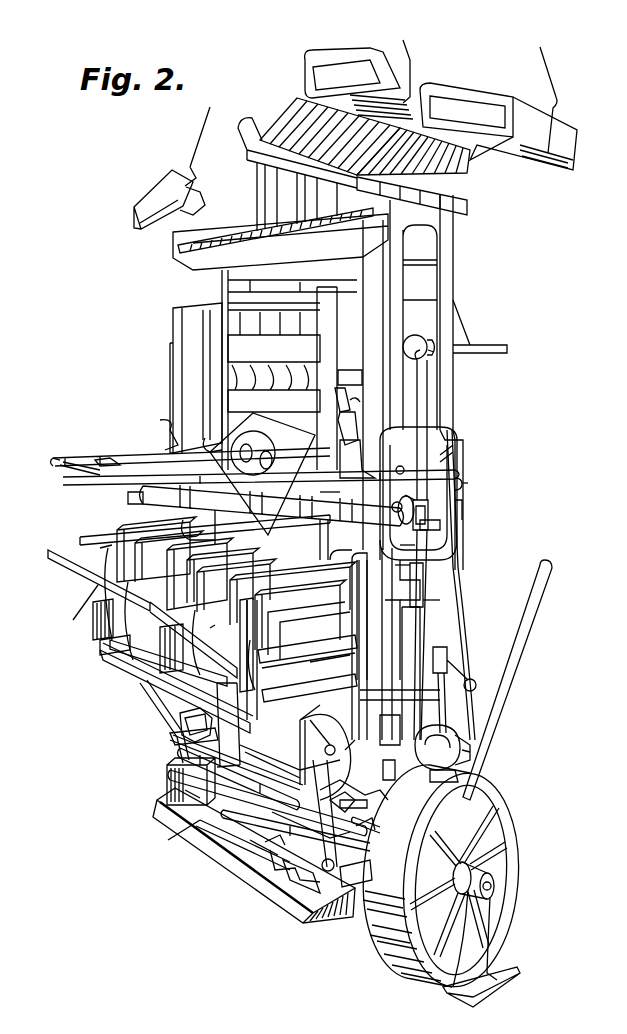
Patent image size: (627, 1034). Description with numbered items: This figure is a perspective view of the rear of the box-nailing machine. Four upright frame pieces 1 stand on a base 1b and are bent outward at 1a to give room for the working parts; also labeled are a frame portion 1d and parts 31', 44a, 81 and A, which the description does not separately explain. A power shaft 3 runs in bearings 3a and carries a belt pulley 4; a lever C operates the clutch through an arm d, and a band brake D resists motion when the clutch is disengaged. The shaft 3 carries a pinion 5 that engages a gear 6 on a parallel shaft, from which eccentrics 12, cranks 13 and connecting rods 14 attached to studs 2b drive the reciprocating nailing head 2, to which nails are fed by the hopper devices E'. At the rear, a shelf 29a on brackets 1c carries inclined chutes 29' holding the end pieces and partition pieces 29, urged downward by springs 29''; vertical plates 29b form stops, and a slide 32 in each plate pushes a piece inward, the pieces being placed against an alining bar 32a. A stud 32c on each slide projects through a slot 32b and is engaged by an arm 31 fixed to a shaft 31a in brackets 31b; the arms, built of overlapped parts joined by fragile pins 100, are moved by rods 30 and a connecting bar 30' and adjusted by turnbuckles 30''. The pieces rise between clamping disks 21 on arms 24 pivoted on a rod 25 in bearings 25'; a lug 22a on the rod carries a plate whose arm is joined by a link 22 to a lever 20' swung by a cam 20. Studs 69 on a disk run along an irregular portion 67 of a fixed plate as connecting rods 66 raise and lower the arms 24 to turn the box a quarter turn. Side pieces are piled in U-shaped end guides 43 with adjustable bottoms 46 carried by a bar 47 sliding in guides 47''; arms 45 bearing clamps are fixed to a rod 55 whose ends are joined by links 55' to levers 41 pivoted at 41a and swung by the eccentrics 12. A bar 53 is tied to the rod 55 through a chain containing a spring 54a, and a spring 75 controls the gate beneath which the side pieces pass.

The upright frame pieces 1 is at (318, 467).
The outward bend of frame pieces 1a is at (463, 483).
The base 1b is at (263, 867).
The brackets 1c is at (365, 728).
The frame upright 1d is at (390, 730).
The nailing head 2 is at (331, 362).
The studs 2b is at (430, 350).
The power shaft 3 is at (290, 761).
The bearings 3a is at (170, 738).
The belt pulley 4 is at (445, 878).
The pinion 5 is at (170, 734).
The gear 6 is at (193, 707).
The eccentrics 12 is at (442, 747).
The cranks 13 is at (314, 542).
The connecting rods 14 is at (428, 393).
The cam 20 is at (356, 739).
The lever 20' is at (330, 757).
The clamping disks 21 is at (410, 500).
The link 22 is at (205, 537).
The lug 22a is at (403, 547).
The arms 24 is at (272, 506).
The cylindrical rod 25 is at (318, 489).
The bearings 25' is at (303, 513).
The end pieces and partition pieces 29 is at (230, 618).
The inclined chutes 29' is at (137, 578).
The springs 29'' is at (215, 628).
The shelf 29a is at (117, 663).
The vertical plates 29b is at (123, 643).
The rods 30 is at (252, 783).
The bar 30' is at (269, 810).
The turnbuckles 30'' is at (192, 793).
The arms 31 is at (235, 775).
The standard 31' is at (227, 725).
The shaft 31a is at (250, 843).
The brackets 31b is at (167, 793).
The slide 32 is at (143, 686).
The alining bar 32a is at (397, 567).
The slot 32b is at (330, 666).
The stud 32c is at (308, 667).
The levers 41 is at (428, 590).
The pivot 41a is at (477, 688).
The end guides 43 is at (333, 378).
The link 44a is at (432, 602).
The arms 45 is at (191, 463).
The bottom 46 is at (261, 475).
The bar 47 is at (344, 411).
The guides 47'' is at (343, 384).
The bar 53 is at (155, 422).
The spring 54a is at (110, 458).
The transverse rod 55 is at (89, 475).
The links 55' is at (477, 466).
The connecting rods 66 is at (263, 534).
The irregular portion of plate 67 is at (403, 508).
The studs 69 is at (410, 457).
The spring 75 is at (206, 437).
The cam plate 81 is at (262, 474).
The pins 100 is at (460, 510).
The bracket A is at (480, 326).
The lever C is at (510, 672).
The band brake D is at (174, 838).
The hopper E' is at (355, 138).
The arm d is at (366, 848).